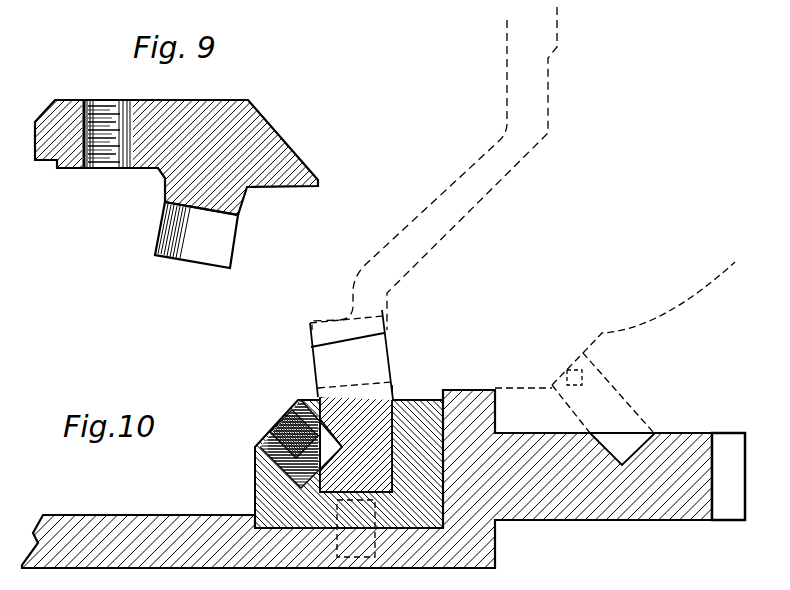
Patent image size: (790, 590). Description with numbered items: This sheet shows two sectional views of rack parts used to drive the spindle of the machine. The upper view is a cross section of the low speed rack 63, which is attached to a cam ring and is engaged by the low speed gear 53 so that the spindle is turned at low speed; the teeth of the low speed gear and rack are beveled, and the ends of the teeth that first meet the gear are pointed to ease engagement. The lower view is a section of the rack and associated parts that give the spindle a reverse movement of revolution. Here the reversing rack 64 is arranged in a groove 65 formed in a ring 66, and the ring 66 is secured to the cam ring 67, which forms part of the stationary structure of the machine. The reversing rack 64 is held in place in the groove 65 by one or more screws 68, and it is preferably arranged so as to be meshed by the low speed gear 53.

In FIG. 10, the low speed gear 53 is at (497, 188).
In FIG. 9, the low speed rack 63 is at (267, 120).
In FIG. 10, the reversing rack 64 is at (332, 365).
In FIG. 10, the groove 65 is at (397, 443).
In FIG. 10, the ring 66 is at (255, 497).
In FIG. 10, the cam ring 67 is at (597, 500).
In FIG. 10, the screws 68 is at (277, 423).